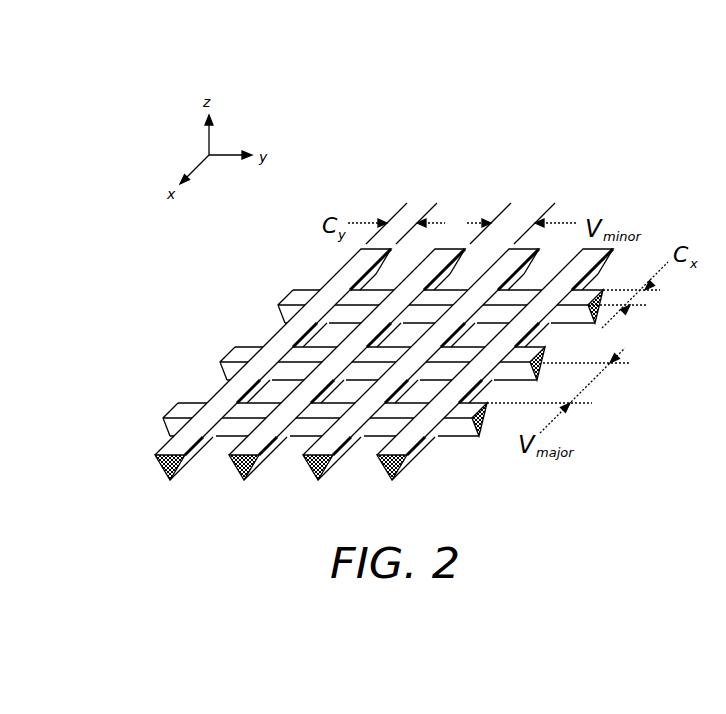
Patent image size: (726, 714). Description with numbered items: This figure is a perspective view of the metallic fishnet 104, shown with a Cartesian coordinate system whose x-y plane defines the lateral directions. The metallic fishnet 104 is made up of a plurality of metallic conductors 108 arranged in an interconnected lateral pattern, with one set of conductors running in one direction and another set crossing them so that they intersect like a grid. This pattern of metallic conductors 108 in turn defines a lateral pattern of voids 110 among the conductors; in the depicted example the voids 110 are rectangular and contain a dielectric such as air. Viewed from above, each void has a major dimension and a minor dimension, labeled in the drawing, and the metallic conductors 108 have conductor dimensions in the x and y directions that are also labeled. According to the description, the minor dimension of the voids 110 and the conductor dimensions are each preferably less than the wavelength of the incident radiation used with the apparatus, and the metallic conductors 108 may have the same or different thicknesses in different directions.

The metallic fishnet 104 is at (373, 155).
The metallic conductors 108 is at (246, 391).
The voids 110 is at (397, 317).